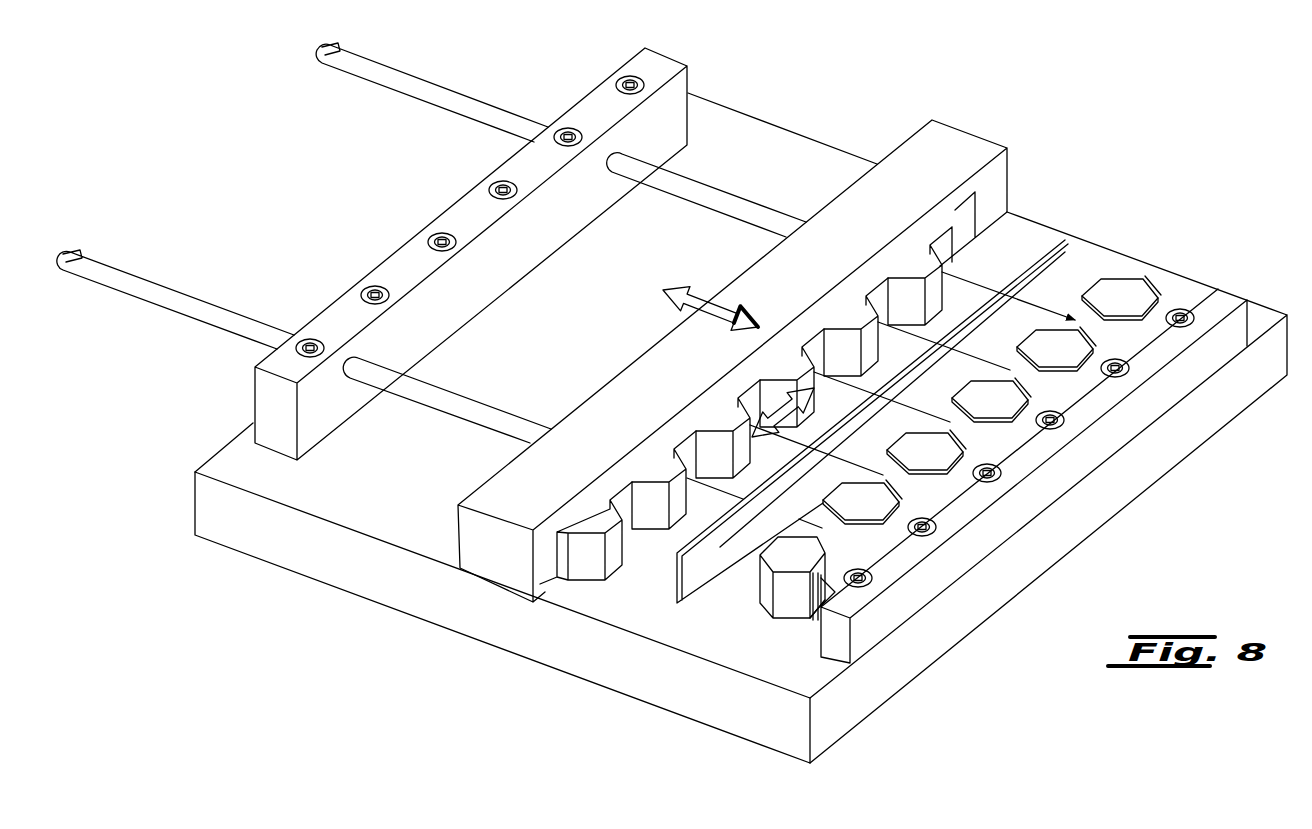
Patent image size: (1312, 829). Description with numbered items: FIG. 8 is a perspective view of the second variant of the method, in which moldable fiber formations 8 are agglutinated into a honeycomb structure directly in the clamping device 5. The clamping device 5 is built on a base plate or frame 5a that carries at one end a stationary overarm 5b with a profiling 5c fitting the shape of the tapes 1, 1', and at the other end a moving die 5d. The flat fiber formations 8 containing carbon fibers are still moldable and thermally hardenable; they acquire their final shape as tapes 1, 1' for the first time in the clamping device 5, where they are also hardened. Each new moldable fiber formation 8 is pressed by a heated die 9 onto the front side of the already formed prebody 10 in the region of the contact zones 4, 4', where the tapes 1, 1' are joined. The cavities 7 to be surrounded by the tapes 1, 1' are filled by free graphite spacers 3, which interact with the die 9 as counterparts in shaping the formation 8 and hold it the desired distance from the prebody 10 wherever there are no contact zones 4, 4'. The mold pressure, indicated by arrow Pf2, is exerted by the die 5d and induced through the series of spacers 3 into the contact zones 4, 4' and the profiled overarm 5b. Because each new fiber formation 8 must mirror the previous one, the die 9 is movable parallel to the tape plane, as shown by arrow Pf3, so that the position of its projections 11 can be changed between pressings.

The tape 1 is at (1062, 425).
The tape 1' is at (1140, 279).
The spacer 3 is at (760, 588).
The contact zone 4 is at (881, 400).
The contact zone 4' is at (1158, 379).
The clamping device 5 is at (370, 613).
The base plate or frame 5a is at (494, 640).
The stationary overarm 5b is at (1228, 300).
The profiling 5c is at (1000, 545).
The moving die 5d is at (967, 143).
The cavity 7 is at (860, 553).
The moldable fiber formation 8 is at (1030, 250).
The heated die 9 is at (920, 258).
The prebody 10 is at (803, 608).
The projection 11 is at (613, 566).
The mold pressure arrow Pf2 is at (710, 294).
The die movement arrow Pf3 is at (770, 410).